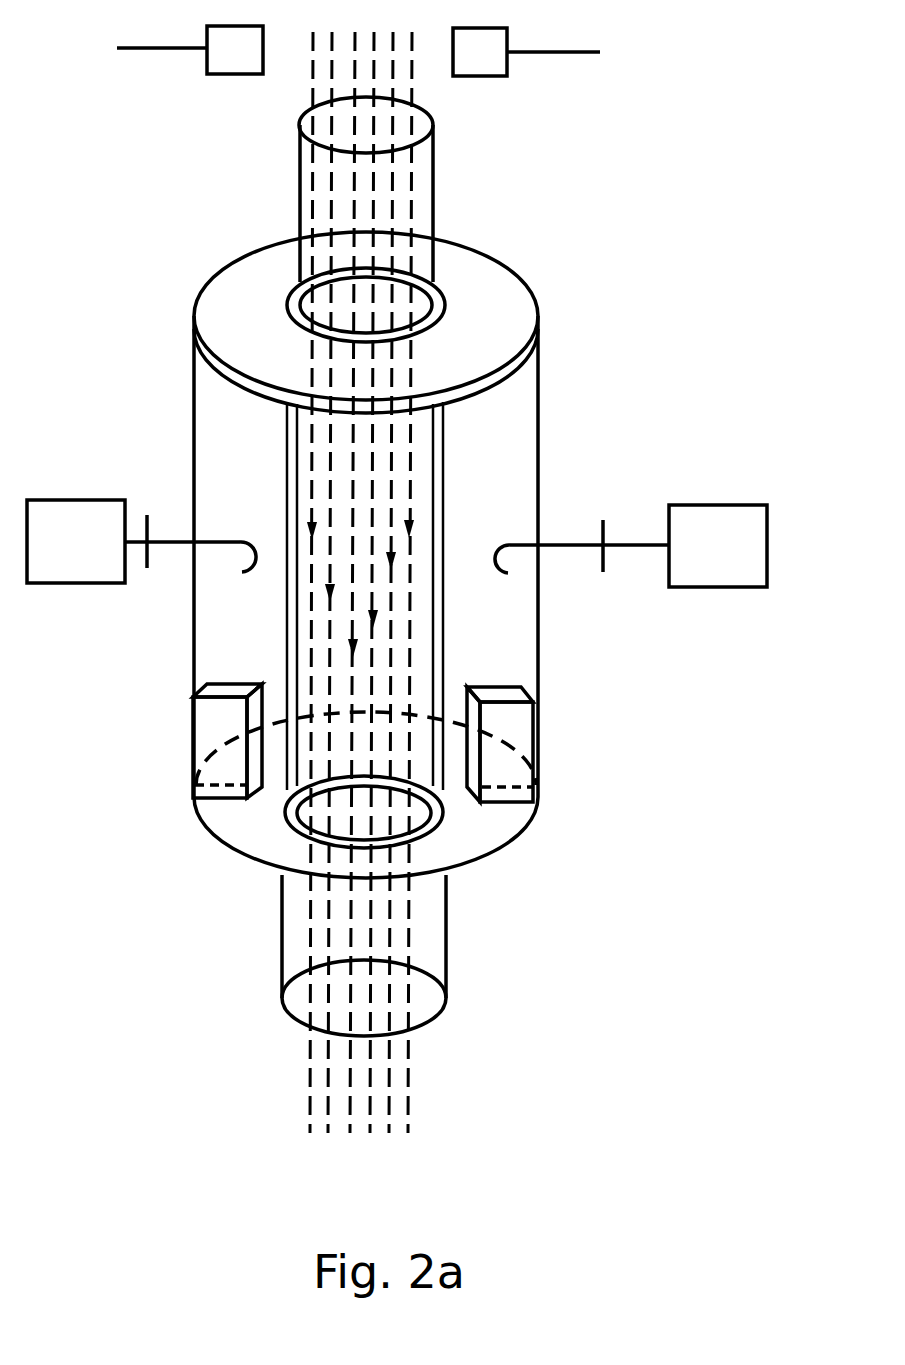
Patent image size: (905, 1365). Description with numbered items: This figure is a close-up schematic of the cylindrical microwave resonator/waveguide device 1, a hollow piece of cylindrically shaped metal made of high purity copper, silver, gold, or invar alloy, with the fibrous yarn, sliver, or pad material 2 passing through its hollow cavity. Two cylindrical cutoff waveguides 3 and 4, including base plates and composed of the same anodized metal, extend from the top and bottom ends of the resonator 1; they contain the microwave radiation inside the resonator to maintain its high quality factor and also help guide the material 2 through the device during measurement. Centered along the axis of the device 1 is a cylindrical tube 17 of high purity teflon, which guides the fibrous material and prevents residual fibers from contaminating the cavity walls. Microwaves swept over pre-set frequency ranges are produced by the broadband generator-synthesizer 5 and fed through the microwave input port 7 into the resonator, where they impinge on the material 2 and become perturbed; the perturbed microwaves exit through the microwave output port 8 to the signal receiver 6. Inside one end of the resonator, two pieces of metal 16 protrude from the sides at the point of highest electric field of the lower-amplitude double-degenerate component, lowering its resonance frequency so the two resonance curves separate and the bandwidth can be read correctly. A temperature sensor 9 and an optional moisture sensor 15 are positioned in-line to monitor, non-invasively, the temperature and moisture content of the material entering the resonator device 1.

The cylindrical microwave resonator/waveguide device 1 is at (500, 445).
The fibrous material 2 is at (353, 128).
The cutoff waveguide 3 is at (433, 197).
The cutoff waveguide 4 is at (447, 937).
The microwave radiation broadband generator-synthesizer 5 is at (76, 541).
The signal receiver 6 is at (718, 546).
The microwave input port 7 is at (173, 535).
The microwave output port 8 is at (557, 542).
The temperature sensor 9 is at (190, 50).
The moisture sensor 15 is at (526, 52).
The metal pieces 16 is at (210, 727).
The cylindrical tube 17 is at (443, 603).